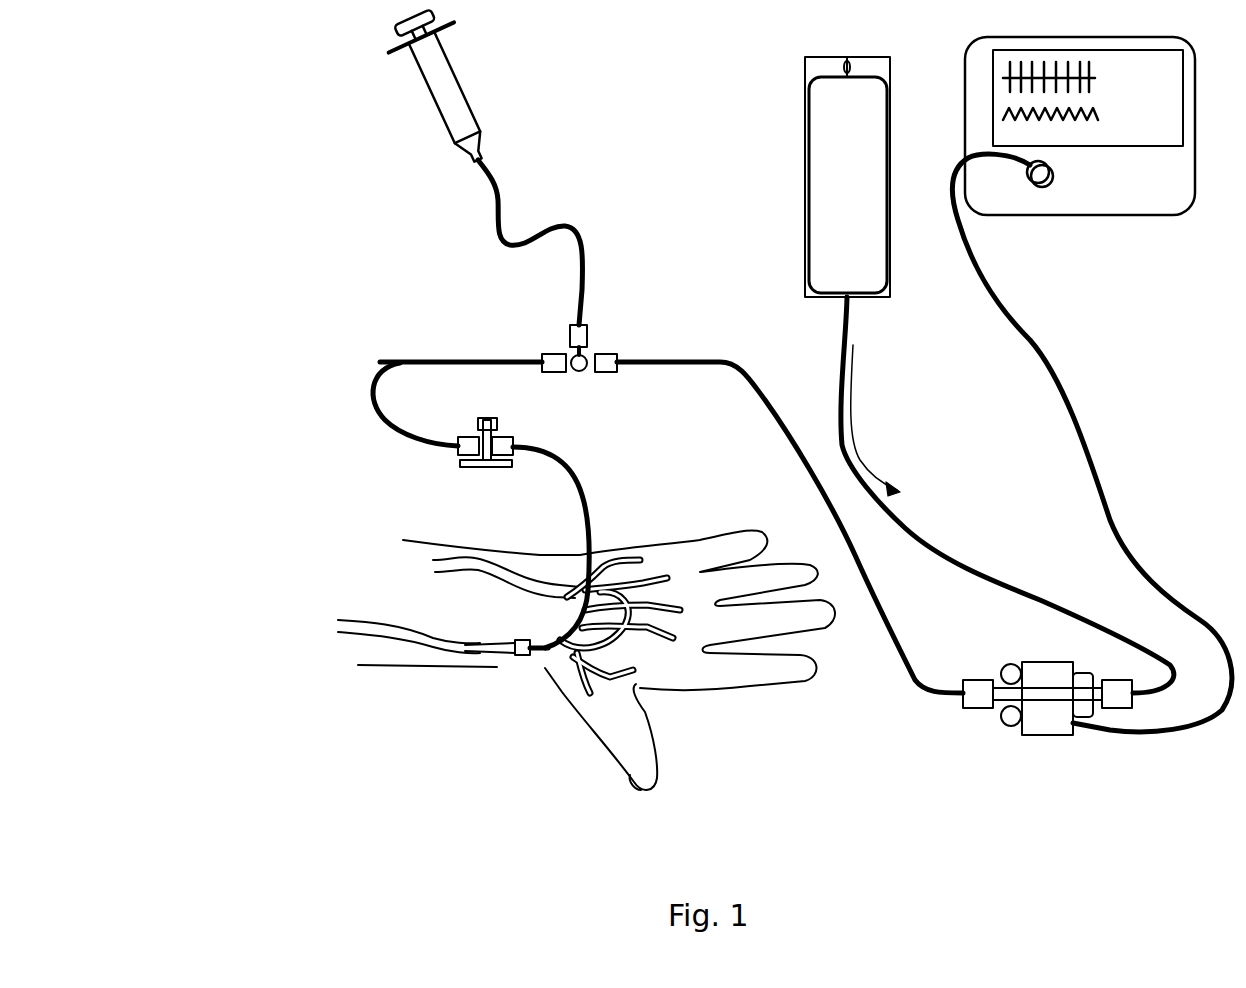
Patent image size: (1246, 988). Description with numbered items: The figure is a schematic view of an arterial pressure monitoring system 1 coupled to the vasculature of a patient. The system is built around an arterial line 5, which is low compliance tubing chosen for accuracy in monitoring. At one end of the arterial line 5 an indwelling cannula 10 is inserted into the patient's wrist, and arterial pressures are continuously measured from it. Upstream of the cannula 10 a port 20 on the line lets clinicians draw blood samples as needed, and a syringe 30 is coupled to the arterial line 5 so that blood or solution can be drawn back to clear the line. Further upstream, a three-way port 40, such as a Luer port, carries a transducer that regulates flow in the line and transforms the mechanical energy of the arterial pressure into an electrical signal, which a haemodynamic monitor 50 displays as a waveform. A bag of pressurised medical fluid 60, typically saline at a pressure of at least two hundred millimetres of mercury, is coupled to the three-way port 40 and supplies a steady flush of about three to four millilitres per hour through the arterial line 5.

The arterial pressure monitoring system 1 is at (145, 217).
The arterial line 5 is at (370, 390).
The indwelling cannula 10 is at (517, 657).
The port 20 is at (485, 470).
The syringe 30 is at (420, 95).
The three-way port 40 is at (1047, 733).
The haemodynamic monitor 50 is at (1080, 215).
The bag of pressurised medical fluid 60 is at (803, 218).